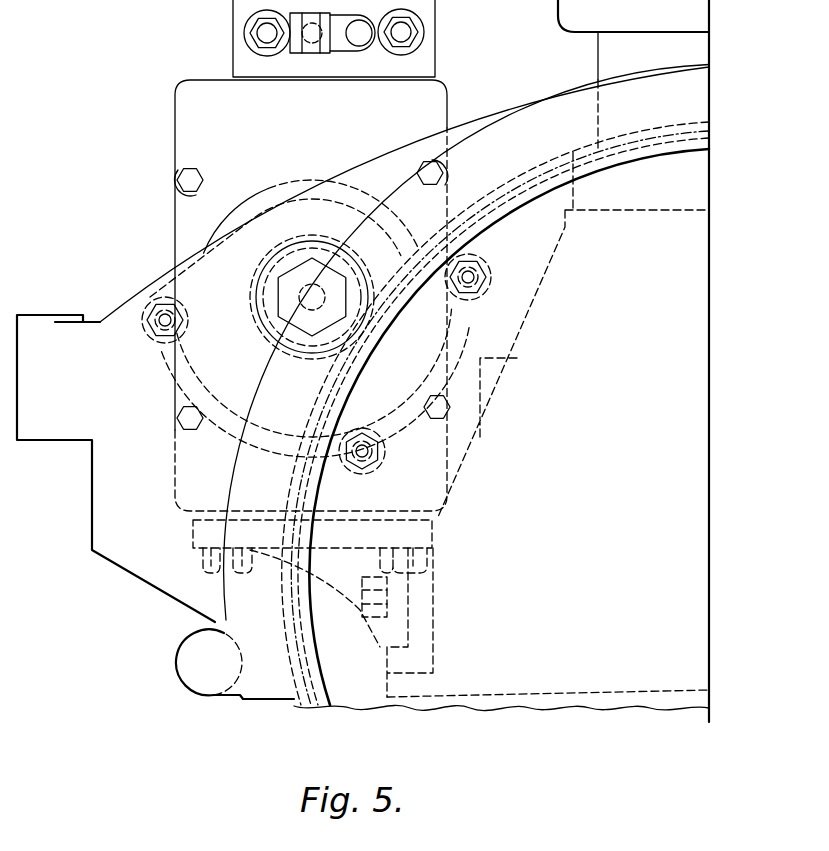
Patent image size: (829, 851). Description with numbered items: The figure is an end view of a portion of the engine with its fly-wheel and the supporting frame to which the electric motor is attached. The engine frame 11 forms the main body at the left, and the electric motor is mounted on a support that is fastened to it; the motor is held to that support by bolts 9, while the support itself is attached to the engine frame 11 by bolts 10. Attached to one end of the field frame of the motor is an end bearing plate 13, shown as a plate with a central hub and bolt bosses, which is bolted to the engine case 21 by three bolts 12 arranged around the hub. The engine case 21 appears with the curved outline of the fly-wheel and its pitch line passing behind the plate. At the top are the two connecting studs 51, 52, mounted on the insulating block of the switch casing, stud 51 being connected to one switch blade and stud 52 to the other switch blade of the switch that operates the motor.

The bolts 9 is at (236, 578).
The bolts 10 is at (367, 612).
The engine frame 11 is at (363, 361).
The bolts 12 is at (155, 331).
The end bearing plate 13 is at (312, 295).
The engine case 21 is at (466, 385).
The connecting stud 51 is at (253, 40).
The connecting stud 52 is at (424, 32).